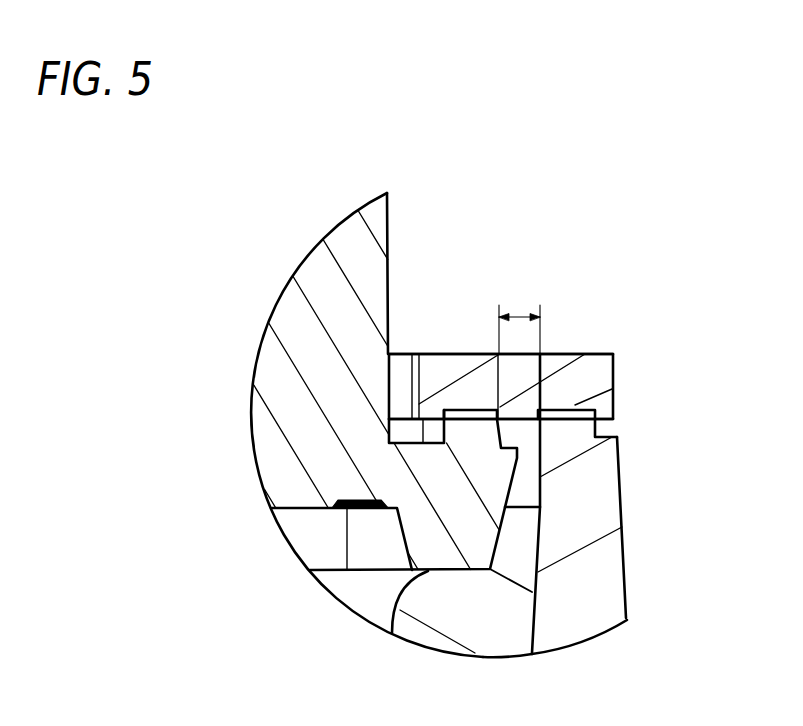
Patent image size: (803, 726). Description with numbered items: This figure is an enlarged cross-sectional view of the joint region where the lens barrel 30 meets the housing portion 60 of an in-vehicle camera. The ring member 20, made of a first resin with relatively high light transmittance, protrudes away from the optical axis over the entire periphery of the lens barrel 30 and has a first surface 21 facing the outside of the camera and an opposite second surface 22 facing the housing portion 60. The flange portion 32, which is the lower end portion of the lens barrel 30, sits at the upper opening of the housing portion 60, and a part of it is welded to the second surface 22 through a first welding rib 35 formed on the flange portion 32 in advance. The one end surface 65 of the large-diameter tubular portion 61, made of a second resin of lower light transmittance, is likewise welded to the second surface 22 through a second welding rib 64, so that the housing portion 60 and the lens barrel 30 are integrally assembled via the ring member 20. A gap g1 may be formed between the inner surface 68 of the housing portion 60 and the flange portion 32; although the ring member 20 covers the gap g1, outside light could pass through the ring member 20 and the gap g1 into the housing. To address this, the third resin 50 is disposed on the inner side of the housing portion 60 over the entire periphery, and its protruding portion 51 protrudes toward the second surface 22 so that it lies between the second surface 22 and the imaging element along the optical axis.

The ring member 20 is at (614, 368).
The first surface 21 is at (482, 354).
The second surface 22 is at (521, 423).
The lens barrel 30 is at (296, 300).
The flange portion 32 is at (437, 543).
The first welding rib 35 is at (463, 430).
The third resin 50 is at (414, 630).
The protruding portion 51 is at (527, 533).
The housing portion 60 is at (635, 504).
The large-diameter tubular portion 61 is at (628, 600).
The second welding rib 64 is at (567, 430).
The one end surface 65 is at (603, 432).
The inner surface 68 is at (523, 647).
The gap g1 is at (519, 316).